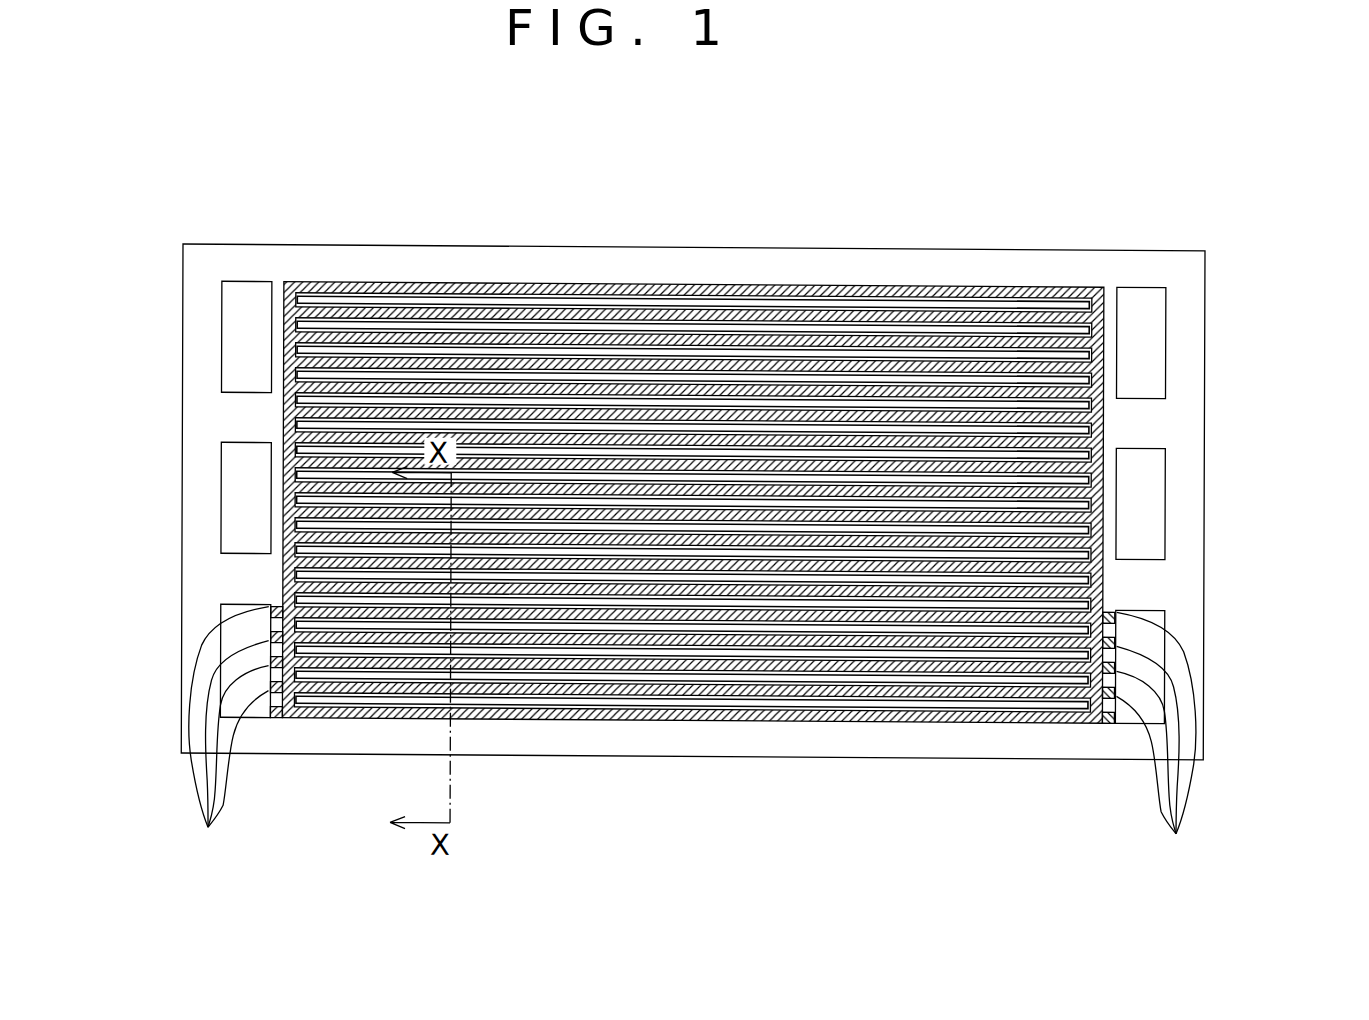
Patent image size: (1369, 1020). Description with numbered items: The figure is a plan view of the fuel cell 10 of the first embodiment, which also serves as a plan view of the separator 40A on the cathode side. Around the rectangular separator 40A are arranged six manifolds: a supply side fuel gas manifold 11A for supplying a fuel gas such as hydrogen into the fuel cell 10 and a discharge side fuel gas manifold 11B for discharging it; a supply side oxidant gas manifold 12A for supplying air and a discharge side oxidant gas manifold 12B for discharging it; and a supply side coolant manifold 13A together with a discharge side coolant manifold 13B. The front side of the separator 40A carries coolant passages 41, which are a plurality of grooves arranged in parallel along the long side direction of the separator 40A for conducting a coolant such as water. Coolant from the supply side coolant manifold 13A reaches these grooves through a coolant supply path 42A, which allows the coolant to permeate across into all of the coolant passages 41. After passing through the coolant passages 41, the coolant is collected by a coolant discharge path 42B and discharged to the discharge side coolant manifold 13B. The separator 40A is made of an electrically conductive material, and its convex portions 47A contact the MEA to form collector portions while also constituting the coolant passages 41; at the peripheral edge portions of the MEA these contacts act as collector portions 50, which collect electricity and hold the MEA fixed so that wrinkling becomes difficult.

The fuel cell 10 is at (1055, 232).
The supply side fuel gas manifold 11A is at (243, 318).
The discharge side fuel gas manifold 11B is at (1145, 313).
The supply side oxidant gas manifold 12A is at (243, 470).
The discharge side oxidant gas manifold 12B is at (1145, 465).
The supply side coolant manifold 13A is at (243, 612).
The discharge side coolant manifold 13B is at (1143, 605).
The separator on the cathode side 40A is at (947, 735).
The coolant passages 41 is at (515, 299).
The convex portions 47A is at (608, 284).
The collector portions 50 is at (638, 718).
The coolant supply path 42A is at (226, 736).
The coolant discharge path 42B is at (1161, 743).